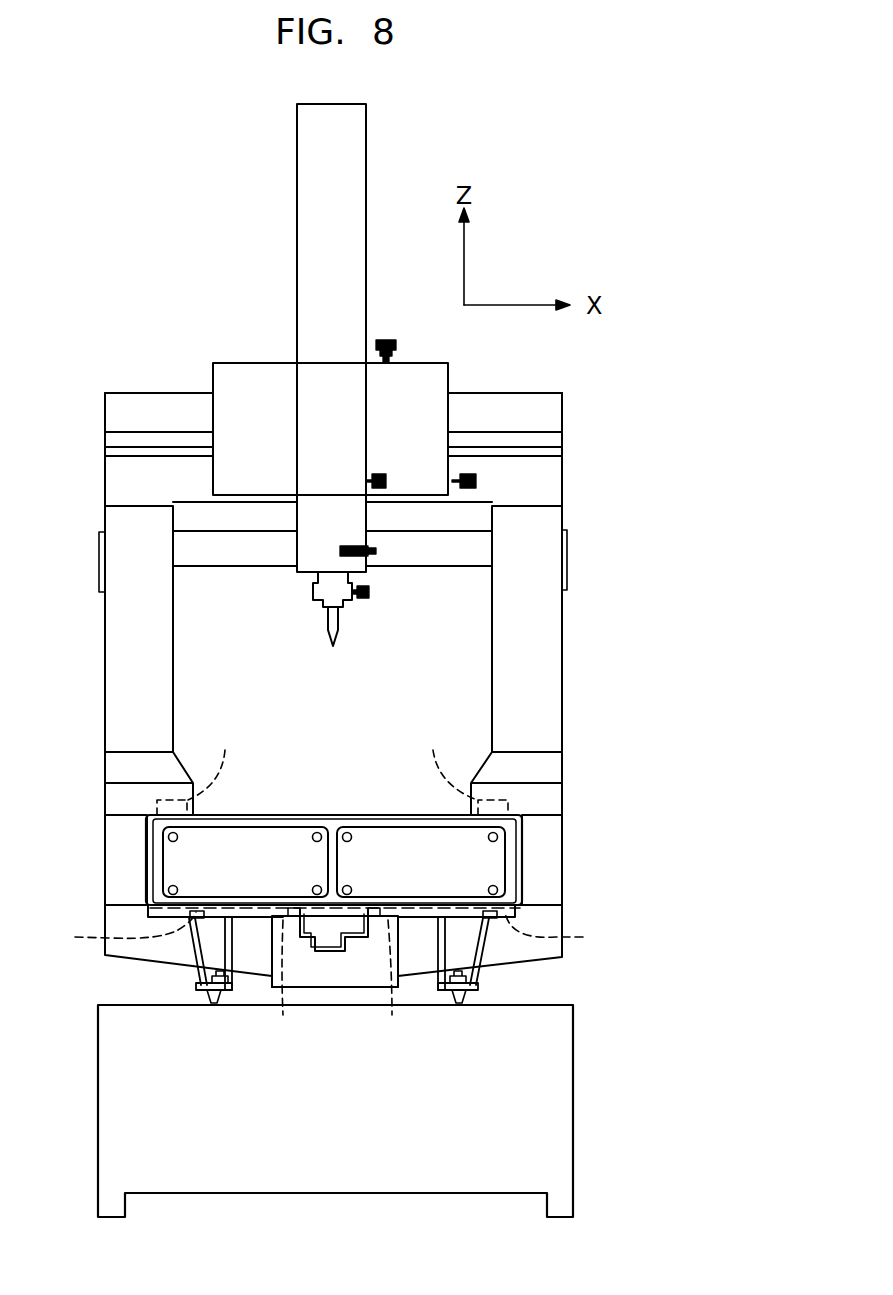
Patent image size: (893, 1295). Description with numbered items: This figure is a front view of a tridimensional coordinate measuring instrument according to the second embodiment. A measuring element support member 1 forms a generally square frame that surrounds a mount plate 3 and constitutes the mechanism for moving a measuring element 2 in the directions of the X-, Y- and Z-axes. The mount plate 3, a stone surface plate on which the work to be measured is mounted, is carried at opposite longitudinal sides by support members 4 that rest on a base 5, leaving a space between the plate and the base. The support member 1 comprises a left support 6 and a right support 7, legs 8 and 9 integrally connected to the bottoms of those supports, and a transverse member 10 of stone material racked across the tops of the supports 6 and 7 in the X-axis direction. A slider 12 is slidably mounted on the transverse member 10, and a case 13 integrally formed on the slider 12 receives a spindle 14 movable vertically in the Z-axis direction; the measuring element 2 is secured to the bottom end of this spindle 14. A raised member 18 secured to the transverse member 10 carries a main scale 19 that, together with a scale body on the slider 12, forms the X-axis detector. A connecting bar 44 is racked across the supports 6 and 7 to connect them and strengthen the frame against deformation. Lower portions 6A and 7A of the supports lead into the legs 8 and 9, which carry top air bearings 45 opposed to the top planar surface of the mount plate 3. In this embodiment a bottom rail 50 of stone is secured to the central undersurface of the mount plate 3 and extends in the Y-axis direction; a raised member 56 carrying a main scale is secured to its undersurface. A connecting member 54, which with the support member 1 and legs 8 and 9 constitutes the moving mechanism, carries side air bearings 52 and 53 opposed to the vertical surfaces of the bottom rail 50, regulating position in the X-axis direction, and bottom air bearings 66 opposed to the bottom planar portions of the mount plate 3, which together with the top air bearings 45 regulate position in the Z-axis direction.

The measuring element support member 1 is at (122, 710).
The measuring element 2 is at (327, 617).
The mount plate 3 is at (334, 815).
The support members 4 is at (205, 946).
The base 5 is at (334, 1180).
The left support 6 is at (116, 619).
The right support 7 is at (549, 640).
The left column lower portion 6A is at (113, 836).
The right column lower portion 7A is at (549, 839).
The leg 8 is at (113, 884).
The leg 9 is at (549, 887).
The transverse member 10 is at (566, 414).
The slider 12 is at (429, 376).
The case 13 is at (305, 241).
The spindle 14 is at (323, 578).
The raised member 18 is at (566, 458).
The main scale 19 is at (566, 448).
The connecting bar 44 is at (432, 554).
The top air bearings 45 is at (332, 767).
The bottom rail 50 is at (305, 928).
The side air bearing 52 is at (269, 984).
The side air bearing 53 is at (397, 984).
The connecting member 54 is at (368, 978).
The raised member 56 is at (330, 937).
The bottom air bearings 66 is at (329, 930).